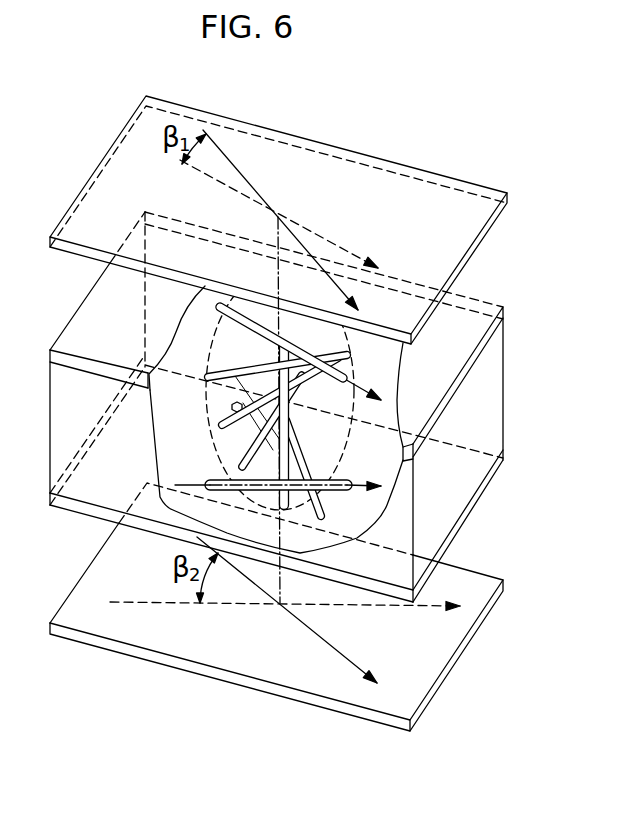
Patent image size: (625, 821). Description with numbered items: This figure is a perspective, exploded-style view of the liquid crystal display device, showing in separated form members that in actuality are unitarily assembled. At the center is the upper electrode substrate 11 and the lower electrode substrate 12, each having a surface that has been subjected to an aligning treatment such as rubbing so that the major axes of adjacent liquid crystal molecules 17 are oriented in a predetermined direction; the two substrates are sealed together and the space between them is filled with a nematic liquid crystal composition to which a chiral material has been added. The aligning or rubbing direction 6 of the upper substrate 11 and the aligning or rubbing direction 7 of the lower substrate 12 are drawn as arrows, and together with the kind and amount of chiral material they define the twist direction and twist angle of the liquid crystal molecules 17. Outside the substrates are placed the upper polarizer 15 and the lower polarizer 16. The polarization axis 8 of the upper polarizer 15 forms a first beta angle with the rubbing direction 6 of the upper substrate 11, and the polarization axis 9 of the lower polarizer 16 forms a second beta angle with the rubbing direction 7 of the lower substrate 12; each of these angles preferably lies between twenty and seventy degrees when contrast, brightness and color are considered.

The aligning or rubbing direction of the upper substrate 6 is at (323, 238).
The aligning or rubbing direction of the lower substrate 7 is at (360, 480).
The polarization axis of the upper polarizer 8 is at (233, 163).
The polarization axis of the lower polarizer 9 is at (302, 626).
The upper electrode substrate 11 is at (480, 318).
The lower electrode substrate 12 is at (487, 490).
The upper polarizer 15 is at (423, 180).
The lower polarizer 16 is at (485, 580).
The liquid crystal molecules 17 is at (235, 325).